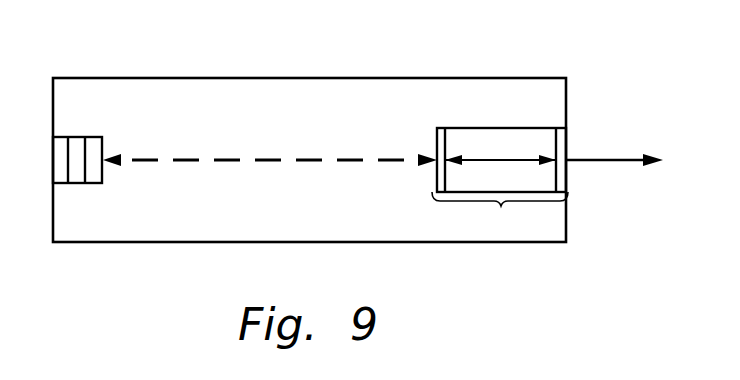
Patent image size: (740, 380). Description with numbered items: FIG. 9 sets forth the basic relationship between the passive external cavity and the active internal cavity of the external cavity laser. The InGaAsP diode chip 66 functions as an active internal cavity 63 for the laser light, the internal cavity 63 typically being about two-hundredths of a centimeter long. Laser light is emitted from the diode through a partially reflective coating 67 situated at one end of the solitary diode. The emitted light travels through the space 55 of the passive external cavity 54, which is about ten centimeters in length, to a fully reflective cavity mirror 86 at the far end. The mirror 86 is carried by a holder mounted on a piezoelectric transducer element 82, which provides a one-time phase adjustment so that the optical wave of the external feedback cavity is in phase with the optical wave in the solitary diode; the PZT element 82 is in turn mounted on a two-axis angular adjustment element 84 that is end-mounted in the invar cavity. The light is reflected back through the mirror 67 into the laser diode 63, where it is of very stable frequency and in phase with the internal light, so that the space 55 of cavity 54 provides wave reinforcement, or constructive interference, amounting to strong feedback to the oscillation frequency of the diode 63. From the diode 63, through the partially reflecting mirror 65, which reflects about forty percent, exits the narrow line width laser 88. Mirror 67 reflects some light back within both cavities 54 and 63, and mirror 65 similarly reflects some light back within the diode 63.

The passive external cavity 54 is at (258, 78).
The space of passive external cavity 55 is at (307, 133).
The piezoelectric transducer element 82 is at (84, 137).
The two-axis angular adjustment element 84 is at (60, 137).
The cavity mirror 86 is at (103, 145).
The active internal cavity 63 is at (488, 128).
The partially reflective coating 67 is at (442, 128).
The partially reflecting mirror 65 is at (568, 140).
The InGaAsP diode chip 66 is at (500, 194).
The narrow line width laser 88 is at (595, 163).